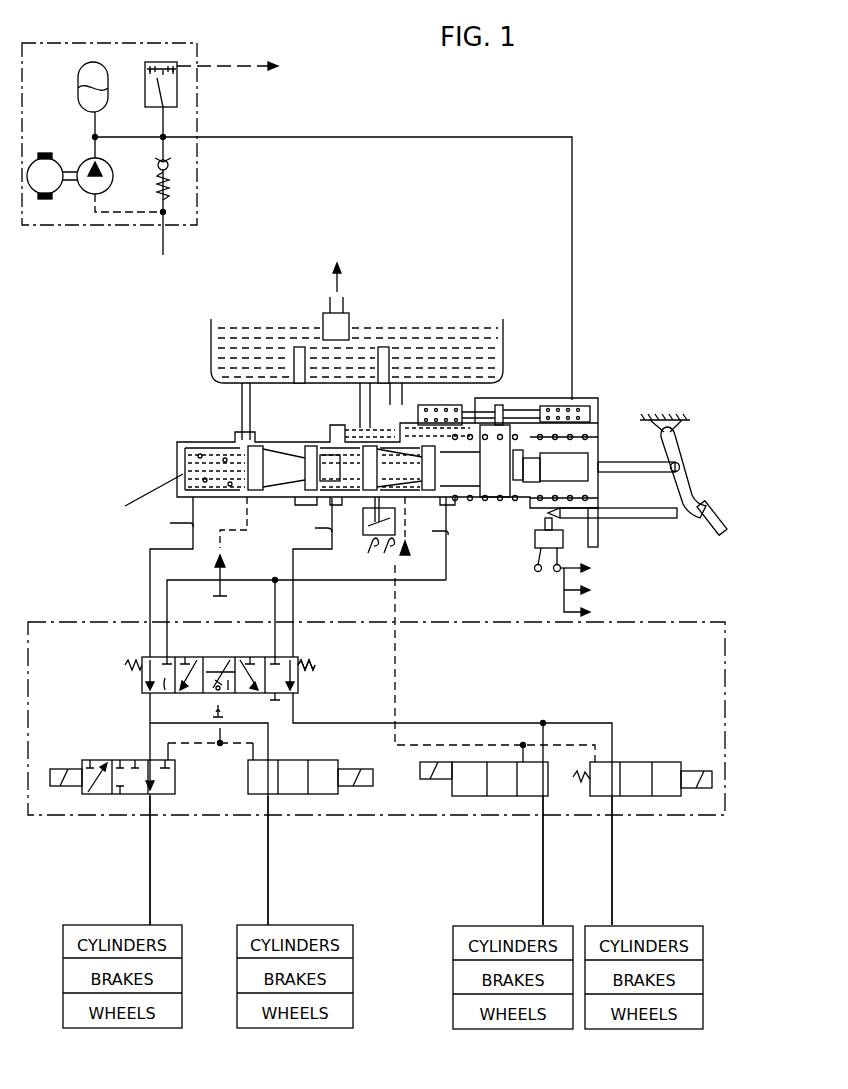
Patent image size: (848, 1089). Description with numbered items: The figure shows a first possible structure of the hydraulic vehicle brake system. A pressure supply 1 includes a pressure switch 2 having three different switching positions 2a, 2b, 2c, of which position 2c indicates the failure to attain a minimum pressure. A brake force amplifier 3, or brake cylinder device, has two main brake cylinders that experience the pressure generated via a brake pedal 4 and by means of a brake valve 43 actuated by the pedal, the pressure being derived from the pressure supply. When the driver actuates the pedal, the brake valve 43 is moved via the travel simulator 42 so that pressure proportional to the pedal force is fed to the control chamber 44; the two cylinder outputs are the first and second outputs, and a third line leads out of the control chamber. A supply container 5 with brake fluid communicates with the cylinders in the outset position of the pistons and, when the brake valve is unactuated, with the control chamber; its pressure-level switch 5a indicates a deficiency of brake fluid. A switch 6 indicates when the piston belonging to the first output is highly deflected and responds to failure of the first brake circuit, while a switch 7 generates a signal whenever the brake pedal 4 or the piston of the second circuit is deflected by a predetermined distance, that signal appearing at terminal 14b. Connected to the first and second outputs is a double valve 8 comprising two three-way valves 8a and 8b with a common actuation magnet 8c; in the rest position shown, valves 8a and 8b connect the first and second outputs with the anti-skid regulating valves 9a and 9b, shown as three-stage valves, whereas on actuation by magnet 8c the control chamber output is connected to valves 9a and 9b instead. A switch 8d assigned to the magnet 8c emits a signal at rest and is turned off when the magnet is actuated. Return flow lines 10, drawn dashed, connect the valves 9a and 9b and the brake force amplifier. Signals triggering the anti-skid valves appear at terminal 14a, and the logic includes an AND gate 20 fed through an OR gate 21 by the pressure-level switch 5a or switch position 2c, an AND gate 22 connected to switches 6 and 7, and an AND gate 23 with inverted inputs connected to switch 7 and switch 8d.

The pressure supply 1 is at (198, 164).
The pressure switch 2 is at (170, 88).
The switching position 2a is at (151, 69).
The switching position 2b is at (163, 68).
The switching position 2c is at (172, 68).
The AND gate 20 is at (243, 67).
The OR gate 21 is at (338, 268).
The supply container 5 is at (211, 348).
The pressure-level switch 5a is at (349, 313).
The brake force amplifier 3 is at (178, 468).
The travel simulator 42 is at (570, 408).
The brake valve 43 is at (503, 406).
The control chamber 44 is at (455, 505).
The brake pedal 4 is at (682, 487).
The switch 7 is at (535, 540).
The terminal 14b is at (595, 569).
The AND gate 23 is at (591, 585).
The AND gate 22 is at (591, 607).
The switch 6 is at (360, 540).
The return flow lines 10 is at (225, 530).
The double valve 8 is at (136, 683).
The three-way valve 8a is at (167, 688).
The three-way valve 8b is at (298, 660).
The actuation magnet 8c is at (226, 660).
The switch 8d is at (229, 690).
The anti-skid regulating valve 9a is at (244, 781).
The anti-skid regulating valve 9b is at (588, 788).
The terminal 14a is at (400, 860).